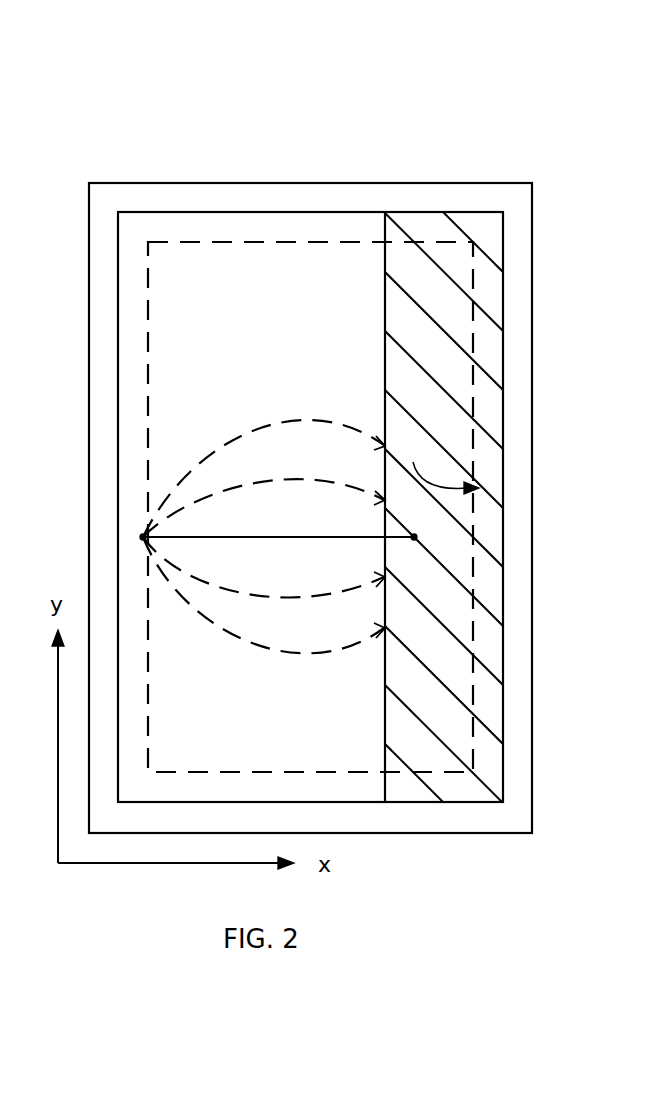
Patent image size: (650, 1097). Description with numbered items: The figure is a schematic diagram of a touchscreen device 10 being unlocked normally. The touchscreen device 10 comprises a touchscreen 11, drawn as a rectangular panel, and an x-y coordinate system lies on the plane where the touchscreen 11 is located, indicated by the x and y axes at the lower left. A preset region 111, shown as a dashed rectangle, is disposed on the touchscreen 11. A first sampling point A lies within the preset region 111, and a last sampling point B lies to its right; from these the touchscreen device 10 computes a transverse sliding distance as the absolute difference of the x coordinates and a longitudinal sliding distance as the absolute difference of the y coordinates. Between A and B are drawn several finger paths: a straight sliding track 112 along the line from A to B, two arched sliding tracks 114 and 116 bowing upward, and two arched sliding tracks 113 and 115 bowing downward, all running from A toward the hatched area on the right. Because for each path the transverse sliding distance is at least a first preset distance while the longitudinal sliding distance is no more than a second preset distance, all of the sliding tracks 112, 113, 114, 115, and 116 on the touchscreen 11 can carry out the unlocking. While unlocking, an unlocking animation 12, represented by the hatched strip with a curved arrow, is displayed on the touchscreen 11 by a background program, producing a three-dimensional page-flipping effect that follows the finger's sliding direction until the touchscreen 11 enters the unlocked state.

The touchscreen device 10 is at (349, 50).
The touchscreen 11 is at (108, 227).
The preset region 111 is at (131, 331).
The unlocking animation 12 is at (396, 305).
The sliding track 112 is at (340, 535).
The sliding track 113 is at (270, 593).
The sliding track 114 is at (268, 477).
The sliding track 115 is at (297, 655).
The sliding track 116 is at (305, 418).